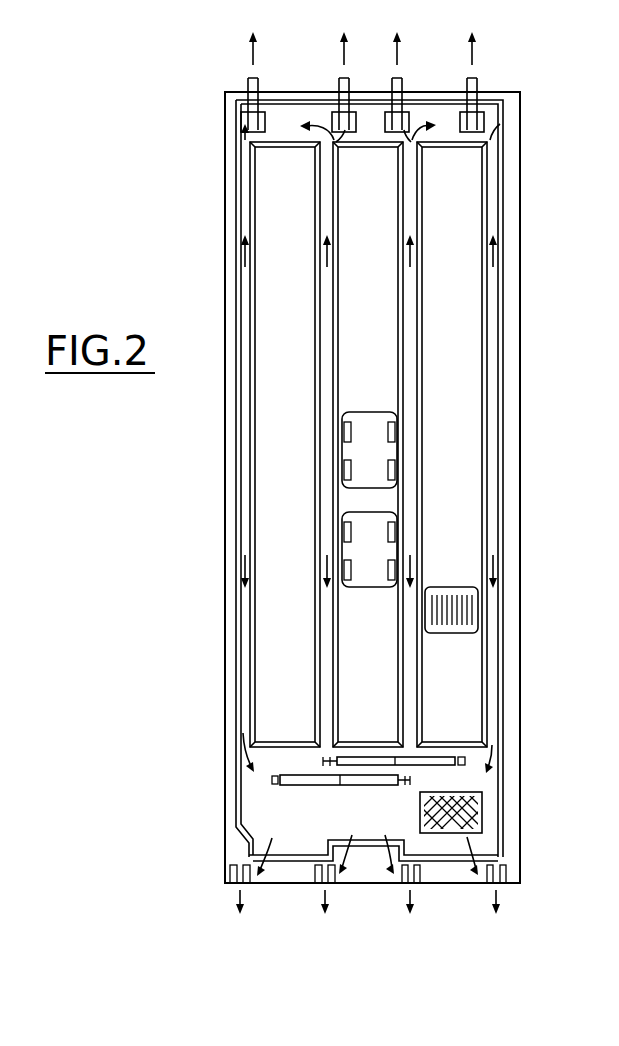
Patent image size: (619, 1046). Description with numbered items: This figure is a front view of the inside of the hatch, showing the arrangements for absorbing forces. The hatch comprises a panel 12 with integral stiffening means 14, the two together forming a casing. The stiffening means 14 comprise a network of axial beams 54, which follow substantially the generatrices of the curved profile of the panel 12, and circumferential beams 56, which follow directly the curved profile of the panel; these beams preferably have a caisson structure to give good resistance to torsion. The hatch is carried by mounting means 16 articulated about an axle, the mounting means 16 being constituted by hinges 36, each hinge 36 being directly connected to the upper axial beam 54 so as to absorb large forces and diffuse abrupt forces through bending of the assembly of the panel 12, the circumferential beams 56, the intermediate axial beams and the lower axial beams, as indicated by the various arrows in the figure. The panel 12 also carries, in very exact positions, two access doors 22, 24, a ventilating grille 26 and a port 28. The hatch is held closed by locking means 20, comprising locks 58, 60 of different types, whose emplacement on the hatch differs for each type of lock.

The panel 12 is at (462, 337).
The stiffening means 14 is at (526, 580).
The mounting means 16 is at (496, 126).
The locking means 20 is at (296, 768).
The access door 22 is at (375, 455).
The access door 24 is at (383, 548).
The ventilating grille 26 is at (468, 815).
The port 28 is at (462, 612).
The hinge 36 is at (396, 88).
The axial beam 54 is at (290, 120).
The circumferential beam 56 is at (242, 515).
The lock 58 is at (422, 870).
The lock 60 is at (437, 758).